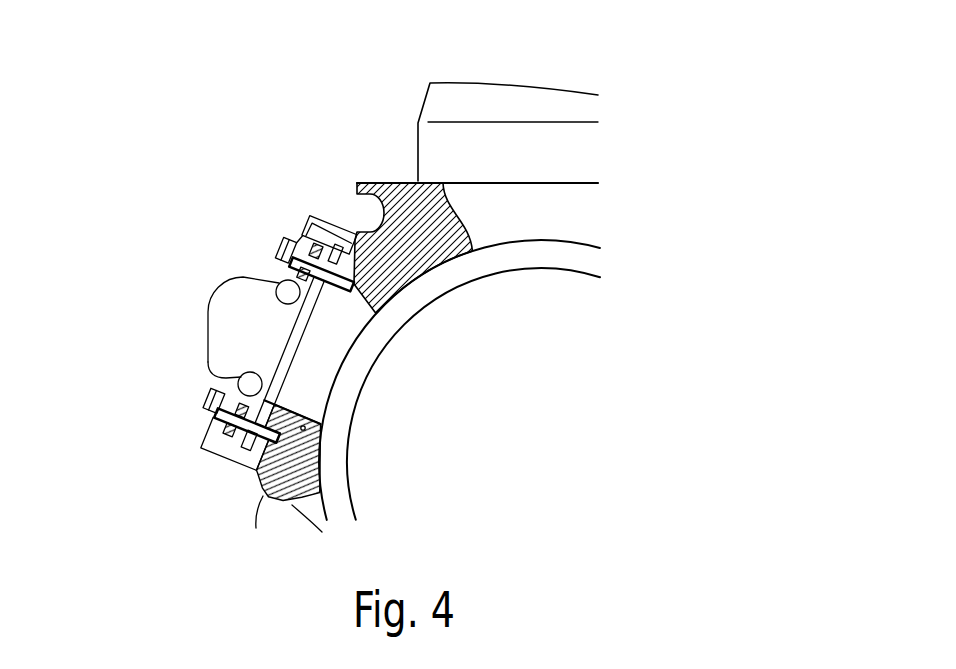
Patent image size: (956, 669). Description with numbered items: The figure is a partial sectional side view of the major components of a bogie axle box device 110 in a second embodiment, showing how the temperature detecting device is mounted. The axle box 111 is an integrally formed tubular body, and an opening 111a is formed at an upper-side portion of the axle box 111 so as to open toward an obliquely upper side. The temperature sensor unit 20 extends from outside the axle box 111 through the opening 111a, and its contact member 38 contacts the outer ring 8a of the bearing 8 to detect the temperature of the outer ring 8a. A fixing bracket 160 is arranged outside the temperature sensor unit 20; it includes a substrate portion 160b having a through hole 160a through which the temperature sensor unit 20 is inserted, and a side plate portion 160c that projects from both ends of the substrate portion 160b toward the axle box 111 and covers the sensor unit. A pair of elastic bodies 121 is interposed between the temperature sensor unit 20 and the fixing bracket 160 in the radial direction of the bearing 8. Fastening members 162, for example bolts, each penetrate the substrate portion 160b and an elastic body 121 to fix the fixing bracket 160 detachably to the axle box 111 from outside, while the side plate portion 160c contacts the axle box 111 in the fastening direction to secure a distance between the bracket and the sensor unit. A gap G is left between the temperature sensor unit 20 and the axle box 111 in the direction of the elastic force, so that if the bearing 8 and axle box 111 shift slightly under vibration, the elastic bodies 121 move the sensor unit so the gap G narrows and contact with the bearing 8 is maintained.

The bearing 8 is at (593, 247).
The outer ring 8a is at (588, 265).
The temperature sensor unit 20 is at (222, 298).
The contact member 38 is at (320, 362).
The axle box device 110 is at (367, 113).
The axle box 111 is at (266, 516).
The opening 111a is at (259, 503).
The elastic body 121 is at (305, 216).
The fixing bracket 160 is at (202, 288).
The through hole 160a is at (232, 381).
The substrate portion 160b is at (276, 268).
The side plate portion 160c is at (220, 460).
The fastening member 162 is at (282, 242).
The gap G is at (248, 460).